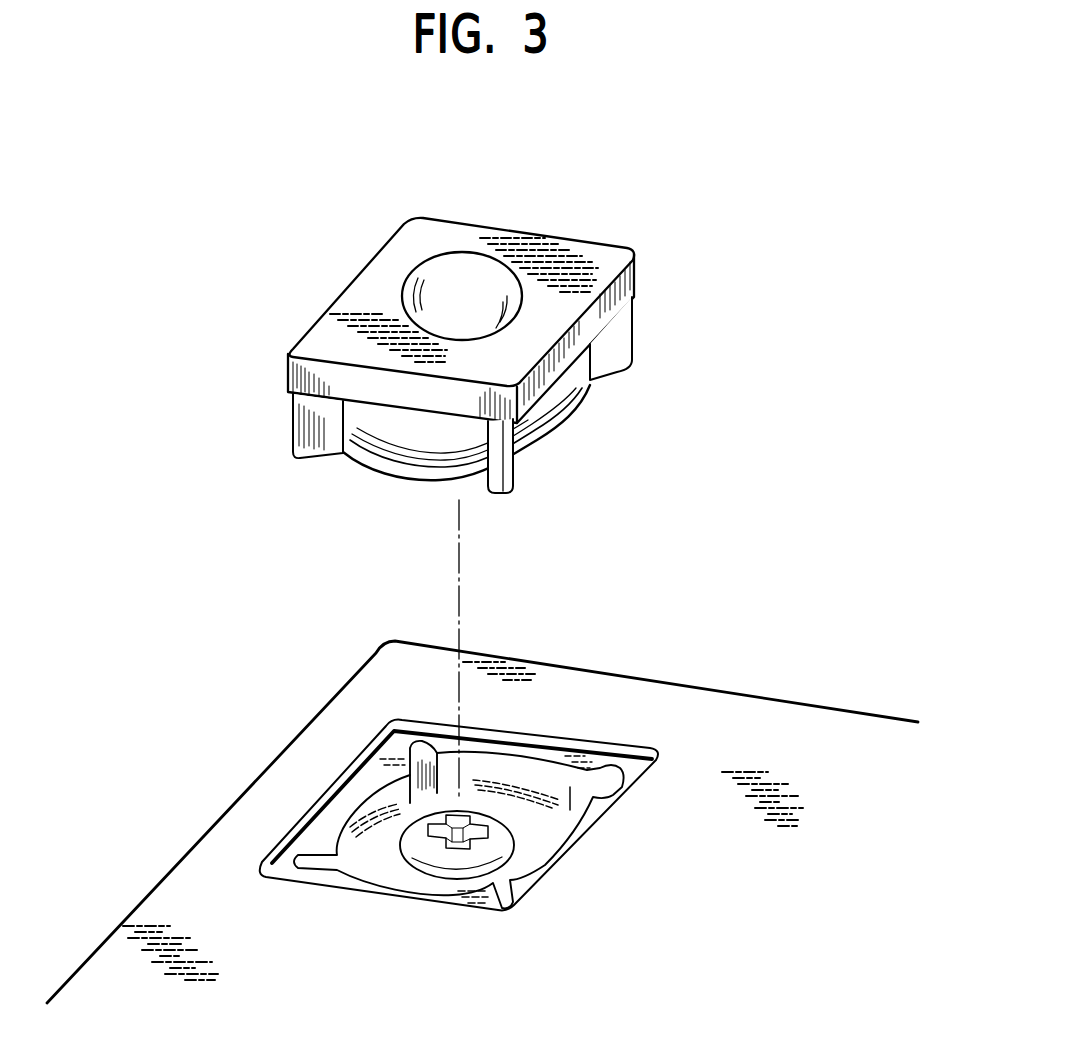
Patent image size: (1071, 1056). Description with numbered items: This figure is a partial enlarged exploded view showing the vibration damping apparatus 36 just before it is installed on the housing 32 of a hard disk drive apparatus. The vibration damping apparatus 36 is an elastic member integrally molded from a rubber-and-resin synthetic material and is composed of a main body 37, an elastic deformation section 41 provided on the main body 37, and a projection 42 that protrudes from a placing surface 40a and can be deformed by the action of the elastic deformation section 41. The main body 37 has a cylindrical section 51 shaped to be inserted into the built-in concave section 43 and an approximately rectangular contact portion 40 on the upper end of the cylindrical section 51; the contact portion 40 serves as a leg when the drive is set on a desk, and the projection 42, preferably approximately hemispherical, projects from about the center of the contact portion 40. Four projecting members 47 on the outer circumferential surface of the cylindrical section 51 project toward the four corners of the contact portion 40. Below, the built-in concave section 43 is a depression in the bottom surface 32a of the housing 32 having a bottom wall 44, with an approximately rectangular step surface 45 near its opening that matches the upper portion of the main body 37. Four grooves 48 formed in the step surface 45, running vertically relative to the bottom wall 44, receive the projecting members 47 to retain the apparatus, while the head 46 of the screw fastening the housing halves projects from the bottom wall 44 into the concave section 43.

The housing 32 is at (272, 763).
The bottom surface 32a is at (773, 737).
The vibration damping apparatus 36 is at (465, 368).
The main body 37 is at (563, 397).
The contact portion 40 is at (413, 400).
The placing surface 40a is at (343, 297).
The elastic deformation section 41 is at (567, 280).
The projection 42 is at (463, 263).
The built-in concave section 43 is at (550, 778).
The bottom wall 44 is at (392, 853).
The step surface 45 is at (612, 807).
The head of fastening screw 46 is at (498, 847).
The projecting members 47 is at (300, 407).
The grooves 48 is at (417, 737).
The cylindrical section 51 is at (430, 442).